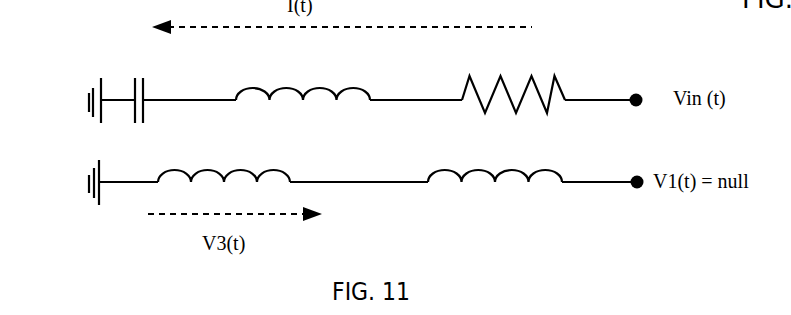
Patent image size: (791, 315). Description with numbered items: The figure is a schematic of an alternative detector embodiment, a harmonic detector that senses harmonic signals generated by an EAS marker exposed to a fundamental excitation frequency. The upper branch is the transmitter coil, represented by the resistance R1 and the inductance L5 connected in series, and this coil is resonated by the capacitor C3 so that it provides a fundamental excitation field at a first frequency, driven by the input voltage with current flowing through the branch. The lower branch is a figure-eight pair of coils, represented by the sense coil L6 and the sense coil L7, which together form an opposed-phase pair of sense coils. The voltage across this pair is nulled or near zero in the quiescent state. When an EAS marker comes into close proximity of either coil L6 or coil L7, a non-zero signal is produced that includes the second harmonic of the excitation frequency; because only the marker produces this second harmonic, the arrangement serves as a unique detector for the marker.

The capacitor C3 is at (127, 86).
The transmitter coil inductance L5 is at (303, 77).
The transmitter coil resistance R1 is at (513, 83).
The sense coil L6 is at (224, 159).
The sense coil L7 is at (495, 160).